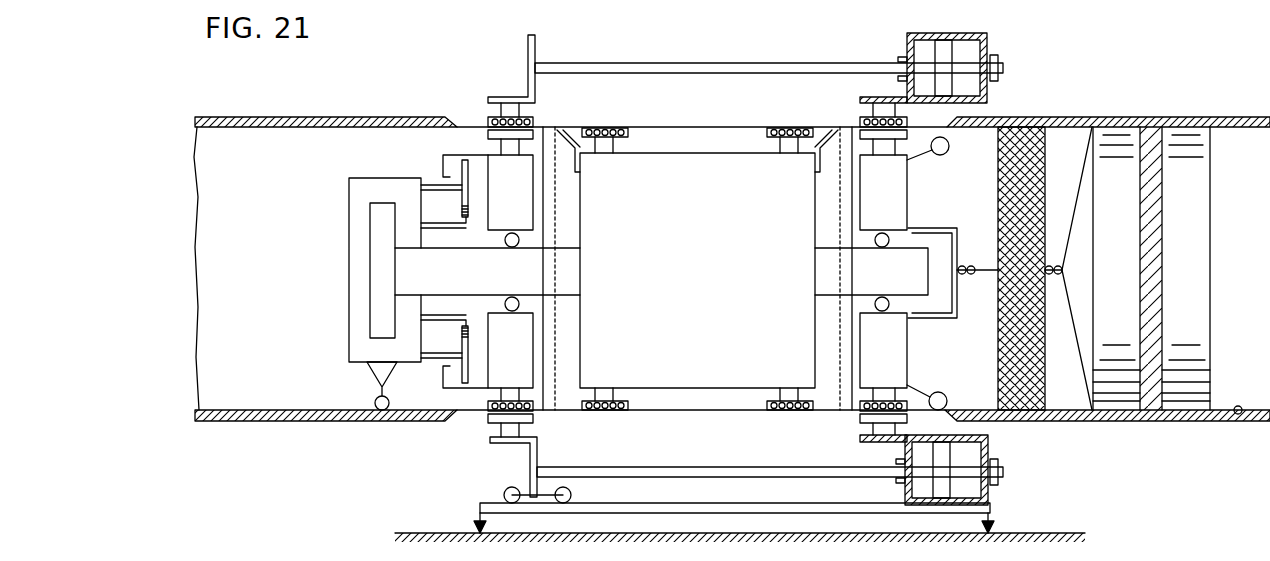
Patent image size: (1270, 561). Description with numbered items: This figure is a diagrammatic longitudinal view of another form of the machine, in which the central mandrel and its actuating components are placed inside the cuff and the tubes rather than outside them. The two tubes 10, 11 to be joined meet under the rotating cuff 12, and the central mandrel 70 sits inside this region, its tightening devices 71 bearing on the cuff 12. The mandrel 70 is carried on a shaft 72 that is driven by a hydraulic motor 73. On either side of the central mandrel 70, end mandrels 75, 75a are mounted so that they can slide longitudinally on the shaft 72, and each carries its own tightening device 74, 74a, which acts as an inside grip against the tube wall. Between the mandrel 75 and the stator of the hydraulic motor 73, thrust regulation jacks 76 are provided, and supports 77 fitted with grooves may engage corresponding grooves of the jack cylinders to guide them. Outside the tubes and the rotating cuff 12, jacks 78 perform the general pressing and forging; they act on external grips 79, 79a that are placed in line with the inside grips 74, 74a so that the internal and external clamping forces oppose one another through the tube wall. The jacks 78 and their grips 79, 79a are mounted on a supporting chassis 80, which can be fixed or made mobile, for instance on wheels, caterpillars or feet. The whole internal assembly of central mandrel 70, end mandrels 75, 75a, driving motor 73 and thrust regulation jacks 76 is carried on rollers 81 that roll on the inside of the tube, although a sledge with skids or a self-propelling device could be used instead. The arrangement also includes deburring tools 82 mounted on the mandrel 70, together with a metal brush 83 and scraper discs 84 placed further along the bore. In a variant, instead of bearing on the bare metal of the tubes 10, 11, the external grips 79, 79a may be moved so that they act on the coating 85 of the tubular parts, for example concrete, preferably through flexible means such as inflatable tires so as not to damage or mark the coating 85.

The upstream duct section 10 is at (277, 410).
The downstream duct section 11 is at (1238, 415).
The cuff 12 is at (733, 412).
The central mandrel 70 is at (698, 374).
The tightening devices 71 is at (618, 414).
The shaft 72 is at (910, 260).
The hydraulic motor 73 is at (378, 293).
The tightening device 74 is at (492, 135).
The tightening device 74a is at (903, 122).
The mandrel 75 is at (502, 372).
The mandrel 75a is at (900, 343).
The thrust regulation jacks 76 is at (462, 170).
The supports 77 is at (458, 228).
The jacks 78 is at (975, 47).
The grip 79 is at (533, 120).
The grip 79a is at (862, 118).
The supporting chassis 80 is at (807, 507).
The rollers 81 is at (948, 400).
The deburring tools 82 is at (574, 134).
The metal brush 83 is at (1050, 388).
The scraper discs 84 is at (1125, 388).
The coating 85 is at (253, 117).